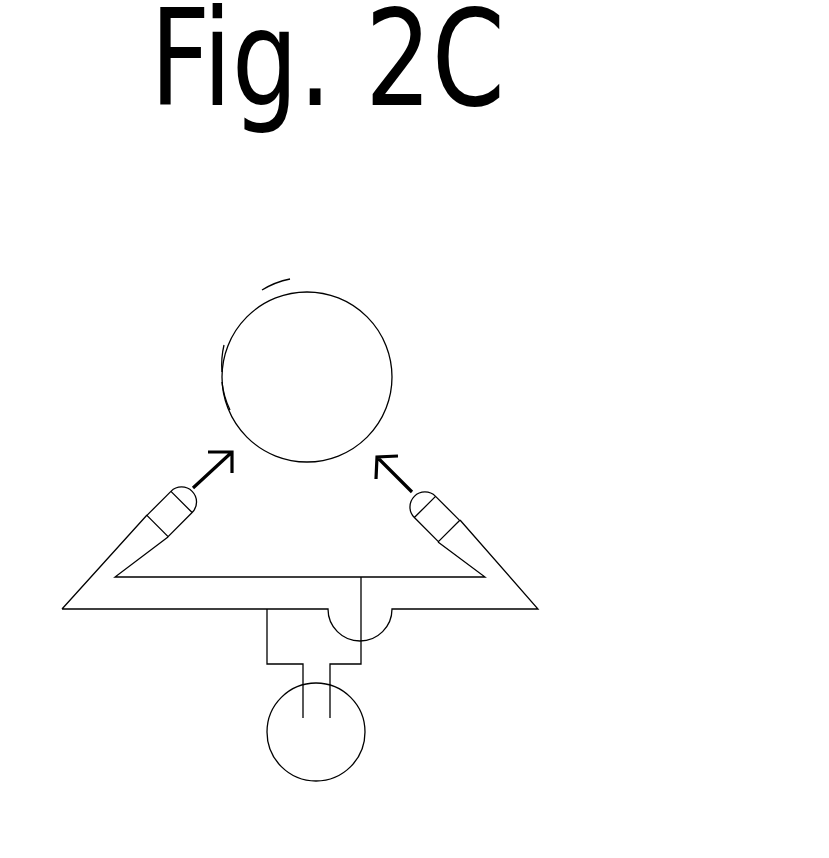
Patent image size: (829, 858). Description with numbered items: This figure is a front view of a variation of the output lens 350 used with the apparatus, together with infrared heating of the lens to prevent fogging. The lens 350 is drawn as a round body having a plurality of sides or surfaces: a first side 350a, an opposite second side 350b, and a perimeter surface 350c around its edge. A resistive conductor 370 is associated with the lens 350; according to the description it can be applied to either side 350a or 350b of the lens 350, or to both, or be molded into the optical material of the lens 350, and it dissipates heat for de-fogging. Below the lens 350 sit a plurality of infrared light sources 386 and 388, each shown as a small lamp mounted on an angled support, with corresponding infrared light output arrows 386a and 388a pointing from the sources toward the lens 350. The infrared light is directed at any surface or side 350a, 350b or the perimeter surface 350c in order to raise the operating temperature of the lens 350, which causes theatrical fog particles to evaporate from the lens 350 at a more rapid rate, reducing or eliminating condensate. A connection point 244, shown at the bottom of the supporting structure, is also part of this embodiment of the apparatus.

The output lens 350 is at (323, 285).
The first side of lens 350a is at (275, 290).
The second side of lens 350b is at (217, 355).
The perimeter surface of lens 350c is at (217, 412).
The resistive conductor 370 is at (373, 380).
The infrared light source 386 is at (145, 502).
The infrared light output arrow 386a is at (198, 465).
The infrared light source 388 is at (460, 510).
The infrared light output arrow 388a is at (405, 467).
The connection point 244 is at (385, 728).